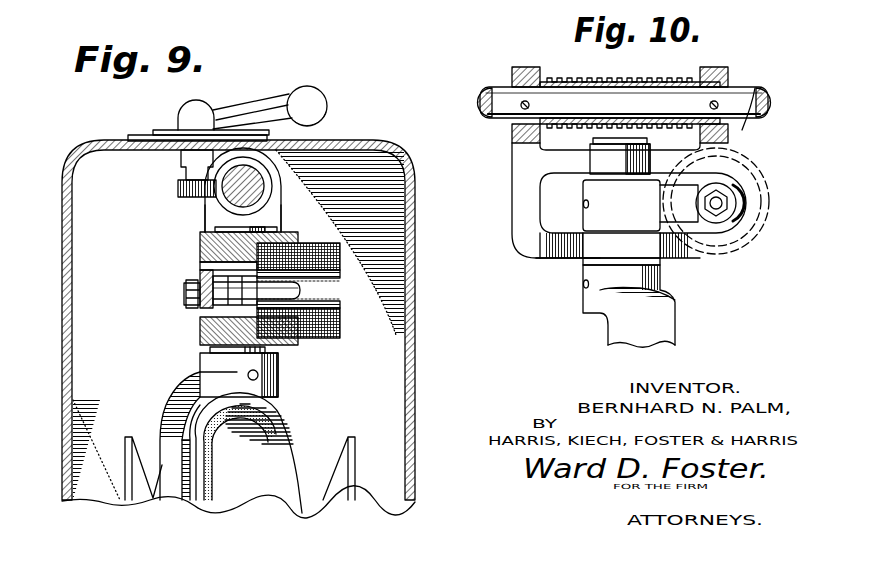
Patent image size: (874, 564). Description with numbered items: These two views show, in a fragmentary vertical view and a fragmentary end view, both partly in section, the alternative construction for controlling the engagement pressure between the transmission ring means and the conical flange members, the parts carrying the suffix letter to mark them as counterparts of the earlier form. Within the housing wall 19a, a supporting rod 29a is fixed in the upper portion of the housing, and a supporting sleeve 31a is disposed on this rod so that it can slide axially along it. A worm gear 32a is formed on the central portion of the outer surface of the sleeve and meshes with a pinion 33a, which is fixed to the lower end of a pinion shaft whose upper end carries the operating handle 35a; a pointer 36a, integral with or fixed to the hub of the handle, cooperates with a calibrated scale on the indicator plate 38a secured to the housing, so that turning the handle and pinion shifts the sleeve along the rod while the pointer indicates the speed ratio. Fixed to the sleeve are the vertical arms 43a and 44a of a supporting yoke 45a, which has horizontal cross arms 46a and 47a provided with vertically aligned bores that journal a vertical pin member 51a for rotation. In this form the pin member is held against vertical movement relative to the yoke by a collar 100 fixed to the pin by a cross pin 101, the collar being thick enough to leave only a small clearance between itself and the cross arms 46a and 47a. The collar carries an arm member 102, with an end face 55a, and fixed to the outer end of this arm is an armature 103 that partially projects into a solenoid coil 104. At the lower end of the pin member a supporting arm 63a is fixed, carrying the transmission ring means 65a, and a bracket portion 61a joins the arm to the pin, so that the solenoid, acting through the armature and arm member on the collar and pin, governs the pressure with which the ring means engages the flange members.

In FIG. 9, the housing / casing 19a is at (128, 482).
In FIG. 9, the supporting rod 29a is at (222, 198).
In FIG. 10, the supporting rod 29a is at (480, 96).
In FIG. 10, the supporting sleeve 31a is at (725, 84).
In FIG. 9, the worm gear 32a is at (232, 200).
In FIG. 10, the worm gear 32a is at (655, 78).
In FIG. 9, the pinion 33a is at (180, 190).
In FIG. 9, the operating handle 35a is at (300, 92).
In FIG. 9, the pointer 36a is at (164, 128).
In FIG. 9, the indicator plate 38a is at (140, 136).
In FIG. 10, the vertical arm 43a is at (512, 134).
In FIG. 10, the vertical arm 44a is at (745, 118).
In FIG. 9, the supporting yoke 45a is at (182, 292).
In FIG. 10, the supporting yoke 45a is at (514, 193).
In FIG. 9, the horizontal cross arm 46a is at (200, 247).
In FIG. 10, the horizontal cross arm 46a is at (553, 162).
In FIG. 9, the horizontal cross arm 47a is at (200, 331).
In FIG. 10, the horizontal cross arm 47a is at (568, 253).
In FIG. 9, the pin member 51a is at (268, 348).
In FIG. 10, the pin member 51a is at (592, 263).
In FIG. 9, the end face 55a is at (355, 462).
In FIG. 9, the bracket 61a is at (258, 375).
In FIG. 9, the supporting arm 63a is at (165, 408).
In FIG. 10, the supporting arm 63a is at (660, 318).
In FIG. 9, the transmission ring means 65a is at (298, 458).
In FIG. 10, the collar 100 is at (588, 217).
In FIG. 10, the cross pin 101 is at (583, 204).
In FIG. 9, the arm member 102 is at (200, 278).
In FIG. 10, the arm member 102 is at (694, 212).
In FIG. 9, the armature 103 is at (292, 292).
In FIG. 9, the solenoid coil 104 is at (330, 256).
In FIG. 10, the solenoid coil 104 is at (752, 172).